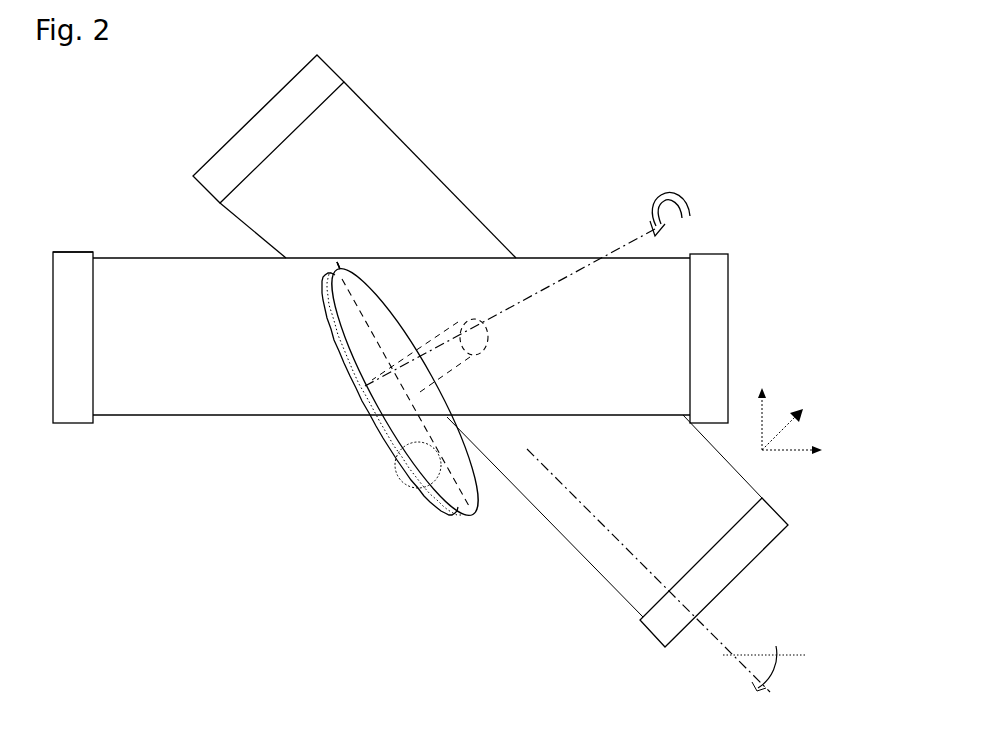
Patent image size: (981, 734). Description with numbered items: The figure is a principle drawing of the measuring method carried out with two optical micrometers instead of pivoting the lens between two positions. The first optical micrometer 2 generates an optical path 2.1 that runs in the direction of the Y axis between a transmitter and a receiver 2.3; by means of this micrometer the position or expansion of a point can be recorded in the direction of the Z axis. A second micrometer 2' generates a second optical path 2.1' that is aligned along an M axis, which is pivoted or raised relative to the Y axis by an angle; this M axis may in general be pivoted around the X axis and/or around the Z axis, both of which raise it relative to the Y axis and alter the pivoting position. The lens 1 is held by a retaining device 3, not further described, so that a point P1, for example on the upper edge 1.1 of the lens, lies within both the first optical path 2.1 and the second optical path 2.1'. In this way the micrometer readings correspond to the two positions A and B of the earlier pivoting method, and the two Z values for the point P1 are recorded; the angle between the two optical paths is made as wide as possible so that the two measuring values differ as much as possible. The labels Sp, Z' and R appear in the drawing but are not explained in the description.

The lens 1 is at (380, 423).
The upper edge 1.1 is at (390, 415).
The optical micrometer 2 is at (391, 393).
The optical path 2.1 is at (391, 442).
The receiver 2.3 is at (75, 408).
The second micrometer 2' is at (647, 456).
The optical path of the second micrometer 2.1' is at (672, 531).
The retaining device 3 is at (461, 321).
The pivot point Sp is at (408, 473).
The Z axis Z is at (393, 351).
The mirror Z' is at (254, 129).
The X axis X is at (789, 415).
The Y axis Y is at (801, 452).
The rotation axis R is at (536, 276).
The M axis M is at (715, 635).
The point P1 is at (340, 263).
The first position A is at (338, 265).
The second position B is at (338, 265).